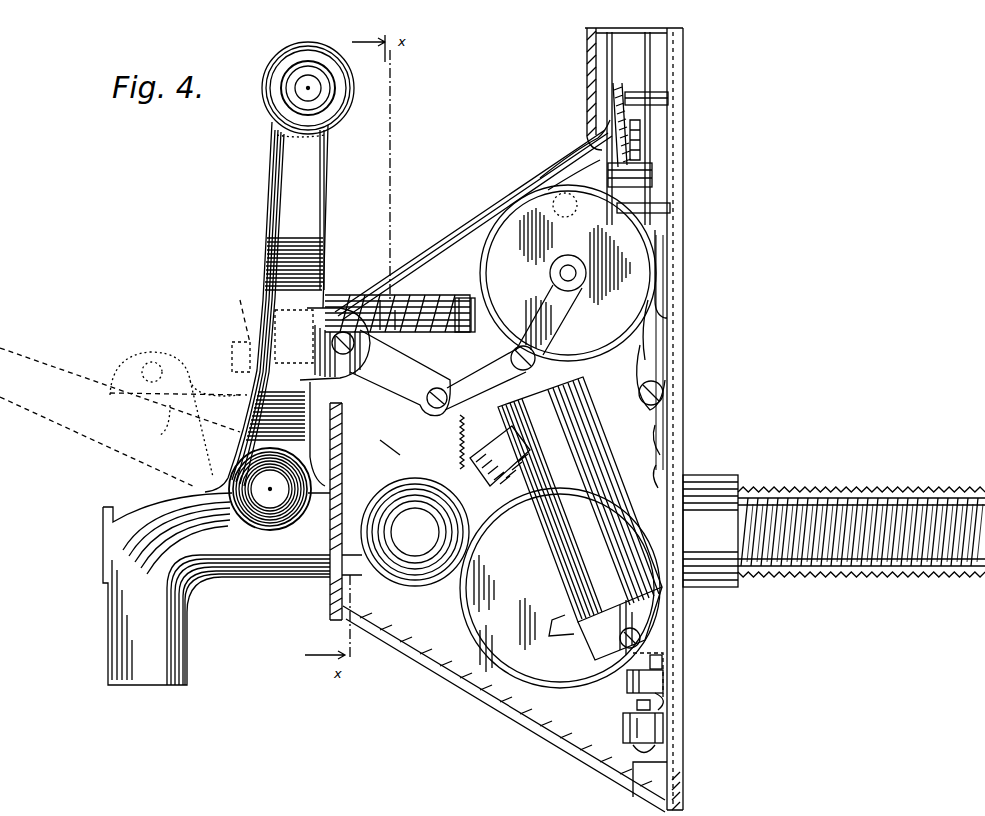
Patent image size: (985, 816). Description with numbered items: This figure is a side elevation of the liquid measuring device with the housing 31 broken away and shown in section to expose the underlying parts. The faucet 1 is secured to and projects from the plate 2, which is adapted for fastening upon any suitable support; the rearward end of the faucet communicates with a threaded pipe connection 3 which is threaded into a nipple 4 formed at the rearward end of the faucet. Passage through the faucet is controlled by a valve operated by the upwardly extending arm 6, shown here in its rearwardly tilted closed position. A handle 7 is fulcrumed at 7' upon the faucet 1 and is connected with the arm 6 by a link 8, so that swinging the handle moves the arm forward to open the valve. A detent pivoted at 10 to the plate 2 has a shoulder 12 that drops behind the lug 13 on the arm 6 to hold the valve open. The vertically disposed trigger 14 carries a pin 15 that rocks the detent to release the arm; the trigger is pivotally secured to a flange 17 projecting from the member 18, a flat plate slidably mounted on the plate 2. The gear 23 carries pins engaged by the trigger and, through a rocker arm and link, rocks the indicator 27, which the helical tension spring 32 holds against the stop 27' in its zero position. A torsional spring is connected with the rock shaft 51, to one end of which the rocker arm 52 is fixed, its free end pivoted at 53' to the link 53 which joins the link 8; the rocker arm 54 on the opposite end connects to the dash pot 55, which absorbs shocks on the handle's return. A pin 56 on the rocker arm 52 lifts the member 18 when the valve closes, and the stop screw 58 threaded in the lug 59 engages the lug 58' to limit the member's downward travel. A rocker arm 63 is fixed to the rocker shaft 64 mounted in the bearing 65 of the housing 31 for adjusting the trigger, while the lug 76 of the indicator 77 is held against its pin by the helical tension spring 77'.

The faucet 1 is at (170, 590).
The plate 2 is at (685, 350).
The threaded pipe connection 3 is at (822, 578).
The nipple 4 is at (716, 475).
The arm 6 is at (372, 502).
The handle 7 is at (287, 267).
The fulcrum 7' is at (270, 532).
The link 8 is at (196, 365).
The pivot 10 is at (672, 332).
The shoulder 12 is at (392, 449).
The lug 13 is at (395, 385).
The trigger 14 is at (448, 296).
The pin 15 is at (391, 373).
The flange 17 is at (640, 425).
The member 18 is at (662, 660).
The gear 23 is at (440, 445).
The indicator 27 is at (660, 128).
The stop 27' is at (675, 95).
The housing 31 is at (508, 196).
The helical tension spring 32 is at (655, 178).
The rock shaft 51 is at (545, 272).
The rocker arm 52 is at (667, 302).
The link 53 is at (234, 328).
The pivotal connection 53' is at (681, 377).
The rocker arm 54 is at (480, 225).
The dash pot 55 is at (580, 518).
The pin 56 is at (520, 345).
The stop screw 58 is at (673, 691).
The lug 58' is at (619, 684).
The lug 59 is at (660, 728).
The rocker arm 63 is at (457, 310).
The rocker shaft 64 is at (398, 296).
The bearing 65 is at (378, 298).
The lug 76 is at (585, 152).
The indicator 77 is at (577, 89).
The helical tension spring 77' is at (589, 125).